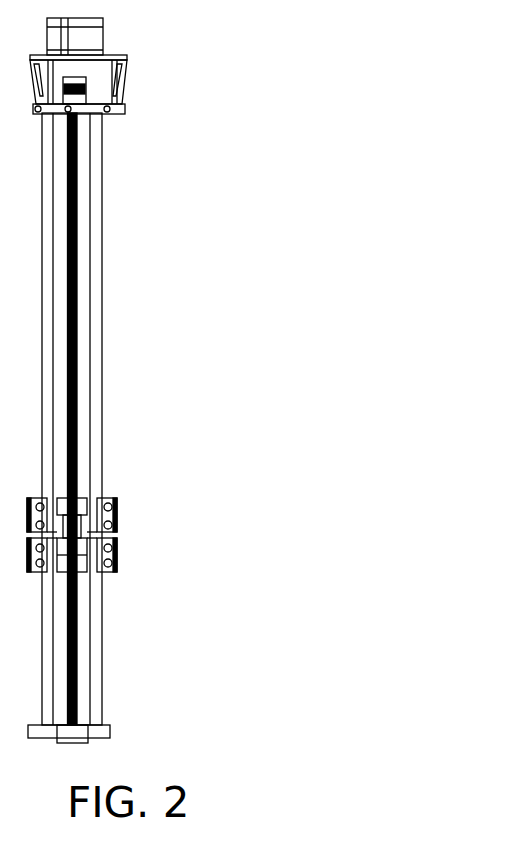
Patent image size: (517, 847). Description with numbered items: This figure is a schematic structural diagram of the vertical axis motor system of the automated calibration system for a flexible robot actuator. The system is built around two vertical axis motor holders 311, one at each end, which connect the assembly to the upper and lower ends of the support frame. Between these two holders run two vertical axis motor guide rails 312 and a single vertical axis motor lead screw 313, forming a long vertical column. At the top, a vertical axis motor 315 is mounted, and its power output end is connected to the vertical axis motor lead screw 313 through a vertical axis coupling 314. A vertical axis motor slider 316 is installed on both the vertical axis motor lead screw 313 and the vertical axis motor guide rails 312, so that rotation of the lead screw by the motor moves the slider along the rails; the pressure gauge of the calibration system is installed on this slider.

The vertical axis motor holder 311 is at (105, 732).
The vertical axis motor guide rail 312 is at (98, 422).
The vertical axis motor lead screw 313 is at (77, 342).
The vertical axis coupling 314 is at (83, 95).
The vertical axis motor 315 is at (88, 38).
The vertical axis motor slider 316 is at (113, 558).